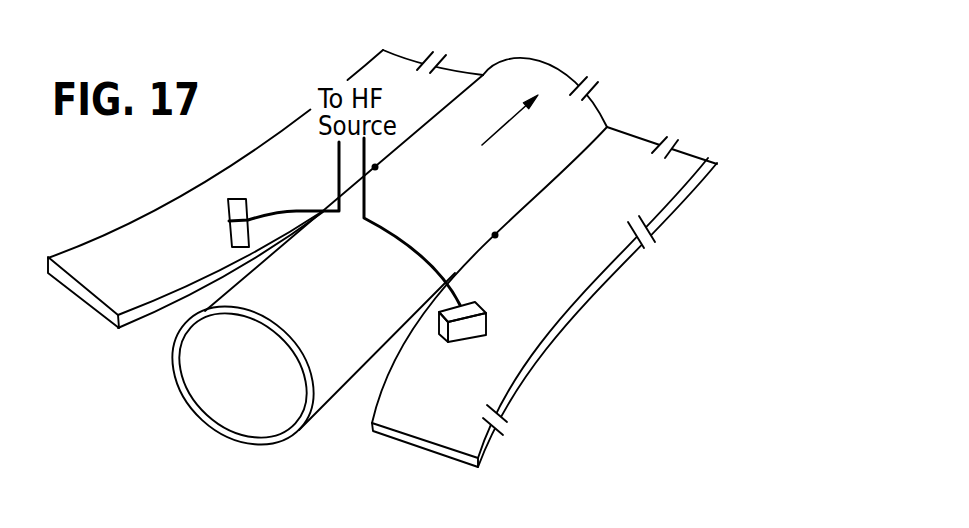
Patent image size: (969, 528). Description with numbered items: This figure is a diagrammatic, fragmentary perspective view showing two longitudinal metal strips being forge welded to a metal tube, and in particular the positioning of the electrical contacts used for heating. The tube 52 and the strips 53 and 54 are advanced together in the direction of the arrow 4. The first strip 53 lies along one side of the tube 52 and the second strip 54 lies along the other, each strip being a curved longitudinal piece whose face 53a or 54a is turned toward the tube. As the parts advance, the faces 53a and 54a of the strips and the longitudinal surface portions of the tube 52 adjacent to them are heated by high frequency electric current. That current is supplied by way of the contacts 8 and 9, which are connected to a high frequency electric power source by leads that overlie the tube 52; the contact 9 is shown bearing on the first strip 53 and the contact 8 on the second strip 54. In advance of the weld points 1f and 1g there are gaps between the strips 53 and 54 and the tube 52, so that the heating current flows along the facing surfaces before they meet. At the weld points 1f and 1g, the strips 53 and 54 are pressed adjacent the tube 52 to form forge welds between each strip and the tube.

The tube 52 is at (376, 248).
The strip 53 is at (265, 220).
The face 53a is at (150, 314).
The strip 54 is at (530, 310).
The face 54a is at (370, 425).
The contact 9 is at (227, 224).
The contact 8 is at (463, 333).
The weld point 1f is at (379, 168).
The weld point 1g is at (499, 234).
The arrow 4 is at (496, 136).